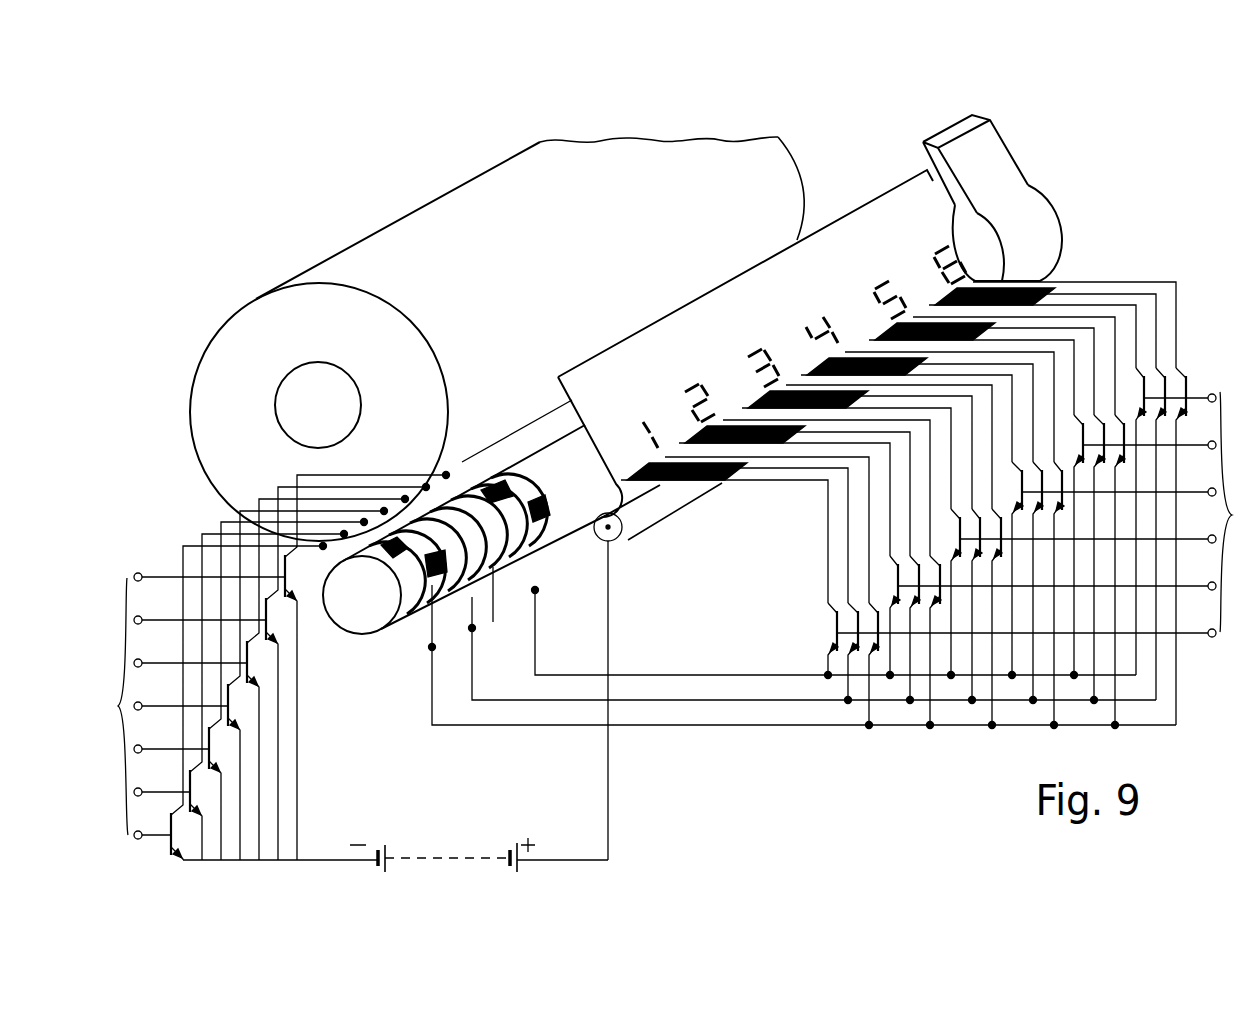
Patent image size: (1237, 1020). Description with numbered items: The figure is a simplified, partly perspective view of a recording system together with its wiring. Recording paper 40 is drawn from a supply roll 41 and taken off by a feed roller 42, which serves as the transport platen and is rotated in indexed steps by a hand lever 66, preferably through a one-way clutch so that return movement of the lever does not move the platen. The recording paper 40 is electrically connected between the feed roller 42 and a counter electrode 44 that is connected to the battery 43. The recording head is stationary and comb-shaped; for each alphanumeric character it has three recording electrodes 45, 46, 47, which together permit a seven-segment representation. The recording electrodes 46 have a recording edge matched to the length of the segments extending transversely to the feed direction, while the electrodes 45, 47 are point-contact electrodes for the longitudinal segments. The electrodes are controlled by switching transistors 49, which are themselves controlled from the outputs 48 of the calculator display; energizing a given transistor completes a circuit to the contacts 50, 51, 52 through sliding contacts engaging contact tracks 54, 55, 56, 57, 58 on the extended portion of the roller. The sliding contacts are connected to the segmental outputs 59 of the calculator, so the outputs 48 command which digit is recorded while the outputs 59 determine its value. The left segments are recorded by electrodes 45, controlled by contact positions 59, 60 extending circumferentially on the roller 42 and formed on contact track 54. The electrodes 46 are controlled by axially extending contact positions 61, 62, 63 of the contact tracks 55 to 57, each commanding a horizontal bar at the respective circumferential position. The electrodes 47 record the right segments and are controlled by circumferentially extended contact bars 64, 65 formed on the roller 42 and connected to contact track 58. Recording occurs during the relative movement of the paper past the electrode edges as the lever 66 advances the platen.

The recording paper 40 is at (918, 203).
The supply roll 41 is at (520, 227).
The feed roller 42 is at (980, 237).
The battery 43 is at (432, 856).
The counter electrode 44 is at (693, 498).
The recording electrode 45 is at (1080, 307).
The recording electrode 46 is at (1043, 282).
The recording electrode 47 is at (1137, 283).
The outputs 48 is at (1233, 600).
The switching transistors 49 is at (1183, 393).
The contact 50 is at (537, 643).
The contact 51 is at (587, 702).
The contact 52 is at (427, 702).
The contact track 54 is at (512, 495).
The contact track 55 is at (540, 532).
The contact track 56 is at (493, 622).
The contact track 57 is at (414, 592).
The contact track 58 is at (432, 598).
The segmental outputs 59 is at (108, 708).
The contact position 60 is at (812, 318).
The contact position 61 is at (600, 548).
The contact position 62 is at (463, 470).
The contact position 63 is at (413, 472).
The contact bar 64 is at (443, 600).
The contact bar 65 is at (400, 560).
The hand lever 66 is at (968, 138).